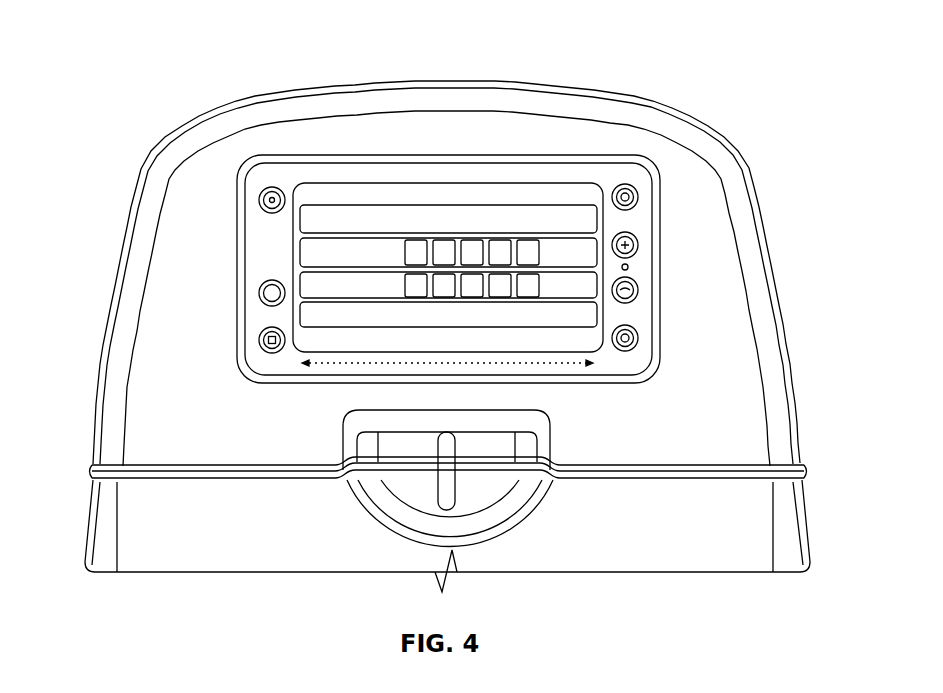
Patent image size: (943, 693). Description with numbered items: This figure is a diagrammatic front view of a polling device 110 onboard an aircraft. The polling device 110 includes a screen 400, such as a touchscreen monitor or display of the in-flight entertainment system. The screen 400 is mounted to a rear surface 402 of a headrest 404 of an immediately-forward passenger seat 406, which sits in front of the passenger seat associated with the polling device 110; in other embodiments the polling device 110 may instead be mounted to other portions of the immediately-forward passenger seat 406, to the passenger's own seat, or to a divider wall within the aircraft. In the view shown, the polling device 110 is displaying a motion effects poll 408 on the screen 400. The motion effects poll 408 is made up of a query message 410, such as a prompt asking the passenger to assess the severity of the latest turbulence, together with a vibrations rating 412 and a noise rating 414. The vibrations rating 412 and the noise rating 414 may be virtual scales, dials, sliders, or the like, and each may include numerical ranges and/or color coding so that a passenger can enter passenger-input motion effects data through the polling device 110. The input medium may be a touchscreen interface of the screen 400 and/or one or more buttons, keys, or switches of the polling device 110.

The polling device 110 is at (580, 158).
The screen 400 is at (315, 185).
The rear surface 402 is at (677, 200).
The headrest 404 is at (510, 103).
The immediately-forward passenger seat 406 is at (776, 283).
The motion effects poll 408 is at (376, 126).
The query message 410 is at (447, 212).
The vibrations rating 412 is at (303, 252).
The noise rating 414 is at (303, 281).